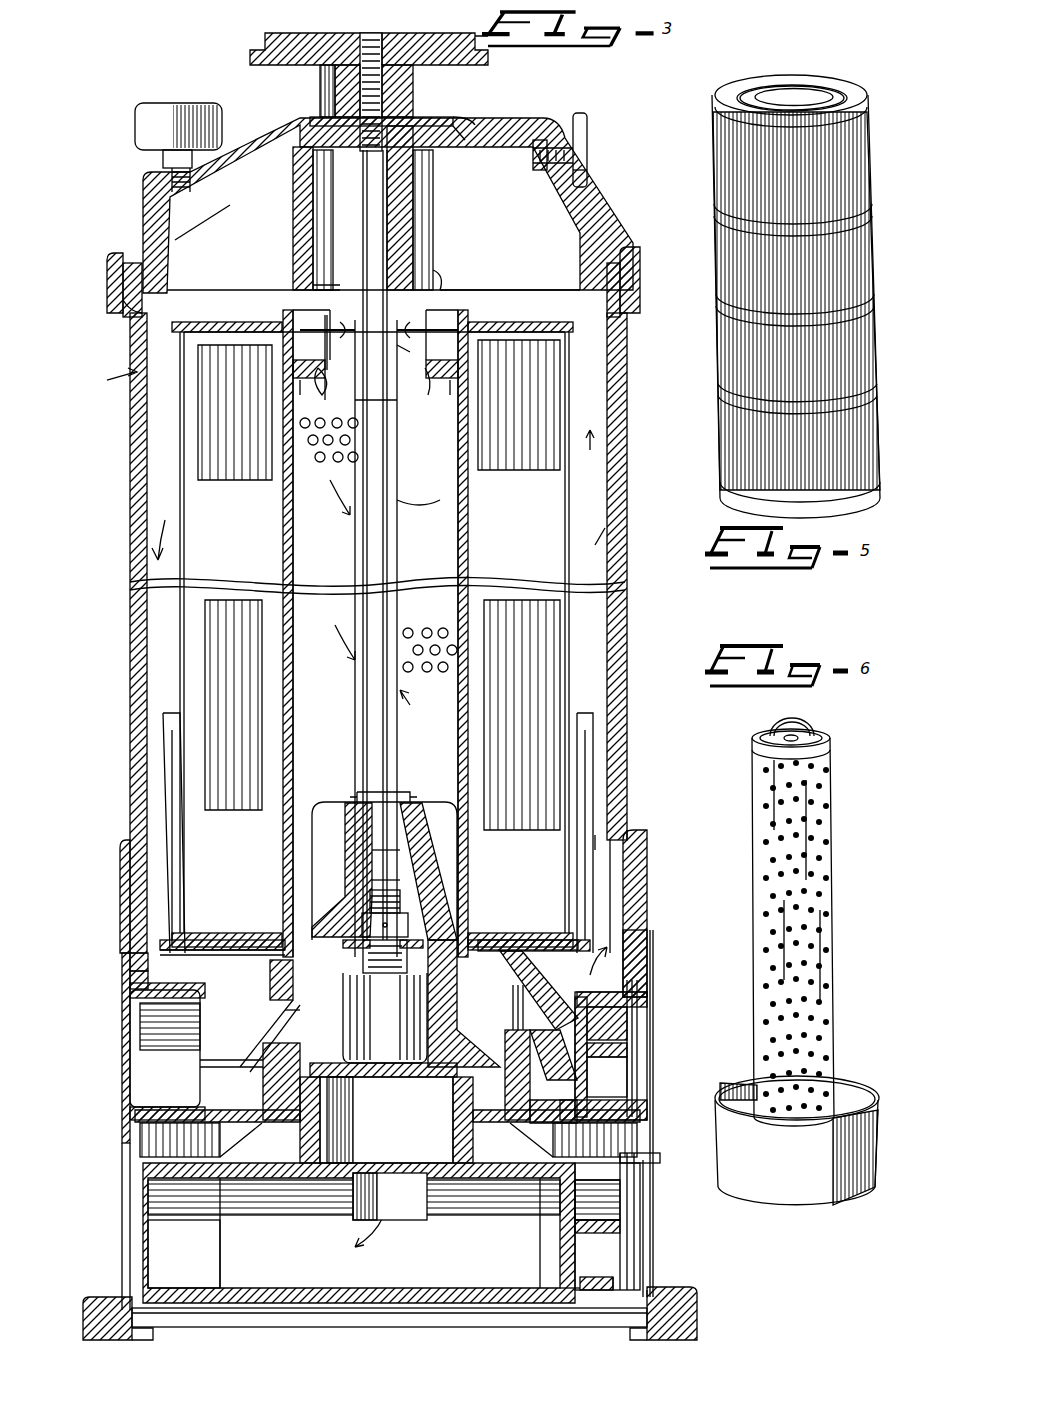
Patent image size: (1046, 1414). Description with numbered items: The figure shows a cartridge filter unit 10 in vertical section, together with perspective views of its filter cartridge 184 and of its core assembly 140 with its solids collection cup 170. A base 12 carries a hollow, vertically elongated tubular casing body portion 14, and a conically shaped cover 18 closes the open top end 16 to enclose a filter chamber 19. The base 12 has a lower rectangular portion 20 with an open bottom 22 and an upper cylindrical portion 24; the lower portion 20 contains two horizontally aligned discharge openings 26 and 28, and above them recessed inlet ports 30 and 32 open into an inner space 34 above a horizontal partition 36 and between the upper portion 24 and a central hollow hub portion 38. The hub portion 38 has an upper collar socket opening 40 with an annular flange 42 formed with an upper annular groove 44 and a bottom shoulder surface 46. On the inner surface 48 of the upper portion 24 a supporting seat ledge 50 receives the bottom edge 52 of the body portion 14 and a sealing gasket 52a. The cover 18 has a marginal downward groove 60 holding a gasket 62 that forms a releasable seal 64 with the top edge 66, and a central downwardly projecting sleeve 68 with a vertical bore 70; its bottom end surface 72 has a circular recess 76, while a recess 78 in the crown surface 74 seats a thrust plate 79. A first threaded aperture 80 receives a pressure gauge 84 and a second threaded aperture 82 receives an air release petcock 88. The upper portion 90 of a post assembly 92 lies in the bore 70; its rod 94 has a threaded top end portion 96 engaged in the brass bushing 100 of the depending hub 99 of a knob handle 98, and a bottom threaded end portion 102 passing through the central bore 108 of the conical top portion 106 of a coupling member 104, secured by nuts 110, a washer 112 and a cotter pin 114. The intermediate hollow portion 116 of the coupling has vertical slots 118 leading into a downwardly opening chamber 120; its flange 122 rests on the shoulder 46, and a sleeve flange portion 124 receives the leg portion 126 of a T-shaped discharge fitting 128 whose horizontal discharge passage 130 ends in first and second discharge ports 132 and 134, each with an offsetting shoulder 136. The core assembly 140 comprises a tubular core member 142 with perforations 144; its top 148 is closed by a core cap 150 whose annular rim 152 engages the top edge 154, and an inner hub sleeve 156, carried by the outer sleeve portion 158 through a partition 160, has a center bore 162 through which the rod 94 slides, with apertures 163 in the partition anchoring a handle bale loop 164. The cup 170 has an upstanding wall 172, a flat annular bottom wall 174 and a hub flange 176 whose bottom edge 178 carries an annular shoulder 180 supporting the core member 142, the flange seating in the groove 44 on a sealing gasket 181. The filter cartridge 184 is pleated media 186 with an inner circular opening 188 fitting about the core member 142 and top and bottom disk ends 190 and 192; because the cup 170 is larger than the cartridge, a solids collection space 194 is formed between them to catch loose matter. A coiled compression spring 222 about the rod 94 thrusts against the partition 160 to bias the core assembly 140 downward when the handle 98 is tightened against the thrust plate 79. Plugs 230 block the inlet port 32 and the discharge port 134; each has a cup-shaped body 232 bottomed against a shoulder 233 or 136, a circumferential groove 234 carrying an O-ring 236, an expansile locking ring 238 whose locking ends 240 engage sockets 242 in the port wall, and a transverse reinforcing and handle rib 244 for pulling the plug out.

In FIG. 3, the cartridge filter unit 10 is at (107, 380).
In FIG. 3, the base 12 is at (647, 968).
In FIG. 3, the tubular casing body portion 14 is at (627, 750).
In FIG. 3, the open top end 16 is at (627, 332).
In FIG. 3, the cover 18 is at (535, 120).
In FIG. 3, the filter chamber 19 is at (130, 455).
In FIG. 3, the lower rectangular portion 20 is at (135, 1120).
In FIG. 3, the open bottom 22 is at (210, 1328).
In FIG. 3, the upper cylindrically-shaped portion 24 is at (122, 940).
In FIG. 3, the discharge opening 26 is at (118, 1262).
In FIG. 3, the discharge opening 28 is at (650, 1248).
In FIG. 3, the inlet port 30 is at (140, 1030).
In FIG. 3, the inlet port 32 is at (647, 1000).
In FIG. 3, the inner space 34 is at (222, 958).
In FIG. 3, the horizontal partition 36 is at (607, 1077).
In FIG. 3, the central hollow hub portion 38 is at (230, 940).
In FIG. 3, the upper collar socket opening 40 is at (280, 938).
In FIG. 3, the annular flange 42 is at (281, 1081).
In FIG. 3, the upper annular groove 44 is at (428, 1005).
In FIG. 3, the bottom shoulder surface 46 is at (440, 1080).
In FIG. 3, the inner surface 48 is at (125, 842).
In FIG. 3, the supporting seat ledge 50 is at (647, 950).
In FIG. 3, the bottom edge 52 is at (130, 960).
In FIG. 3, the sealing gasket 52a is at (130, 980).
In FIG. 3, the marginal annular downward groove 60 is at (115, 255).
In FIG. 3, the gasket 62 is at (123, 275).
In FIG. 3, the releasable seal 64 is at (123, 300).
In FIG. 3, the top edge 66 is at (640, 268).
In FIG. 3, the sleeve 68 is at (433, 215).
In FIG. 3, the vertical bore 70 is at (313, 215).
In FIG. 3, the bottom end surface 72 is at (313, 285).
In FIG. 3, the crown surface 74 is at (462, 116).
In FIG. 3, the downward circular recess 76 is at (440, 270).
In FIG. 3, the recess 78 is at (312, 118).
In FIG. 3, the thrust plate 79 is at (466, 128).
In FIG. 3, the first threaded aperture 80 is at (200, 186).
In FIG. 3, the second threaded aperture 82 is at (573, 130).
In FIG. 3, the pressure gauge 84 is at (135, 125).
In FIG. 3, the air release petcock 88 is at (587, 176).
In FIG. 3, the upper portion 90 is at (293, 190).
In FIG. 3, the post assembly 92 is at (420, 705).
In FIG. 3, the rod 94 is at (388, 548).
In FIG. 3, the threaded top end portion 96 is at (360, 50).
In FIG. 3, the knob handle 98 is at (268, 42).
In FIG. 3, the depending hub 99 is at (320, 85).
In FIG. 3, the brass bushing 100 is at (385, 45).
In FIG. 3, the bottom threaded end portion 102 is at (400, 898).
In FIG. 3, the coupling member 104 is at (408, 922).
In FIG. 3, the top portion 106 is at (430, 815).
In FIG. 3, the central bore 108 is at (345, 848).
In FIG. 3, the nuts 110 is at (345, 878).
In FIG. 3, the washer 112 is at (410, 795).
In FIG. 3, the cotter pin 114 is at (395, 790).
In FIG. 3, the intermediate hollow cylindrically-shaped portion 116 is at (510, 965).
In FIG. 3, the elongate vertical slots 118 is at (343, 1046).
In FIG. 3, the downwardly opening chamber 120 is at (400, 998).
In FIG. 3, the radially outwardly extending flange 122 is at (505, 1060).
In FIG. 3, the sleeve flange portion 124 is at (520, 1110).
In FIG. 3, the vertical central hollow leg portion 126 is at (340, 1120).
In FIG. 3, the T-shaped tubular discharge fitting 128 is at (300, 1180).
In FIG. 3, the horizontal discharge passage 130 is at (354, 1216).
In FIG. 3, the first discharge port 132 is at (148, 1180).
In FIG. 3, the second discharge port 134 is at (545, 1220).
In FIG. 3, the offsetting shoulder 136 is at (540, 1180).
In FIG. 3, the core assembly 140 is at (476, 527).
In FIG. 6, the core assembly 140 is at (839, 783).
In FIG. 3, the tubular core member 142 is at (462, 460).
In FIG. 6, the tubular core member 142 is at (834, 832).
In FIG. 3, the perforations 144 is at (320, 462).
In FIG. 6, the perforations 144 is at (819, 907).
In FIG. 3, the top 148 is at (458, 368).
In FIG. 3, the core cap 150 is at (500, 290).
In FIG. 3, the annular rim 152 is at (460, 312).
In FIG. 3, the top edge 154 is at (322, 330).
In FIG. 3, the inner hub sleeve 156 is at (400, 405).
In FIG. 6, the inner hub sleeve 156 is at (799, 738).
In FIG. 3, the outer sleeve portion 158 is at (322, 392).
In FIG. 3, the partition 160 is at (420, 345).
In FIG. 3, the vertical center bore 162 is at (400, 440).
In FIG. 3, the apertures 163 is at (300, 390).
In FIG. 3, the handle bale loop 164 is at (318, 380).
In FIG. 6, the handle bale loop 164 is at (814, 712).
In FIG. 3, the solids collection cup 170 is at (595, 790).
In FIG. 6, the solids collection cup 170 is at (880, 1115).
In FIG. 3, the upstanding wall 172 is at (165, 740).
In FIG. 3, the annular bottom wall 174 is at (640, 902).
In FIG. 3, the hub flange 176 is at (495, 952).
In FIG. 3, the bottom edge 178 is at (262, 1012).
In FIG. 3, the annular shoulder 180 is at (290, 1012).
In FIG. 3, the sealing gasket 181 is at (210, 1055).
In FIG. 3, the filter cartridge 184 is at (596, 536).
In FIG. 5, the filter cartridge 184 is at (866, 191).
In FIG. 3, the pleated filter media 186 is at (570, 500).
In FIG. 5, the pleated filter media 186 is at (855, 275).
In FIG. 3, the inner circular opening 188 is at (460, 495).
In FIG. 5, the inner circular opening 188 is at (790, 92).
In FIG. 3, the top disk-shaped end 190 is at (560, 318).
In FIG. 5, the top disk-shaped end 190 is at (868, 98).
In FIG. 3, the bottom disk-shaped end 192 is at (560, 933).
In FIG. 5, the bottom disk-shaped end 192 is at (880, 492).
In FIG. 3, the solids collection space 194 is at (600, 710).
In FIG. 6, the solids collection space 194 is at (845, 1080).
In FIG. 3, the coiled helical compression spring 222 is at (411, 333).
In FIG. 3, the plug 230 is at (640, 1070).
In FIG. 3, the cup-shaped body 232 is at (570, 1290).
In FIG. 3, the shoulder 233 is at (130, 1110).
In FIG. 3, the circumferential groove 234 is at (610, 1292).
In FIG. 3, the O-ring 236 is at (647, 1105).
In FIG. 3, the expansile locking ring 238 is at (640, 1040).
In FIG. 3, the locking ends 240 is at (660, 1290).
In FIG. 3, the sockets 242 is at (650, 1153).
In FIG. 3, the reinforcing and handle rib 244 is at (620, 1226).